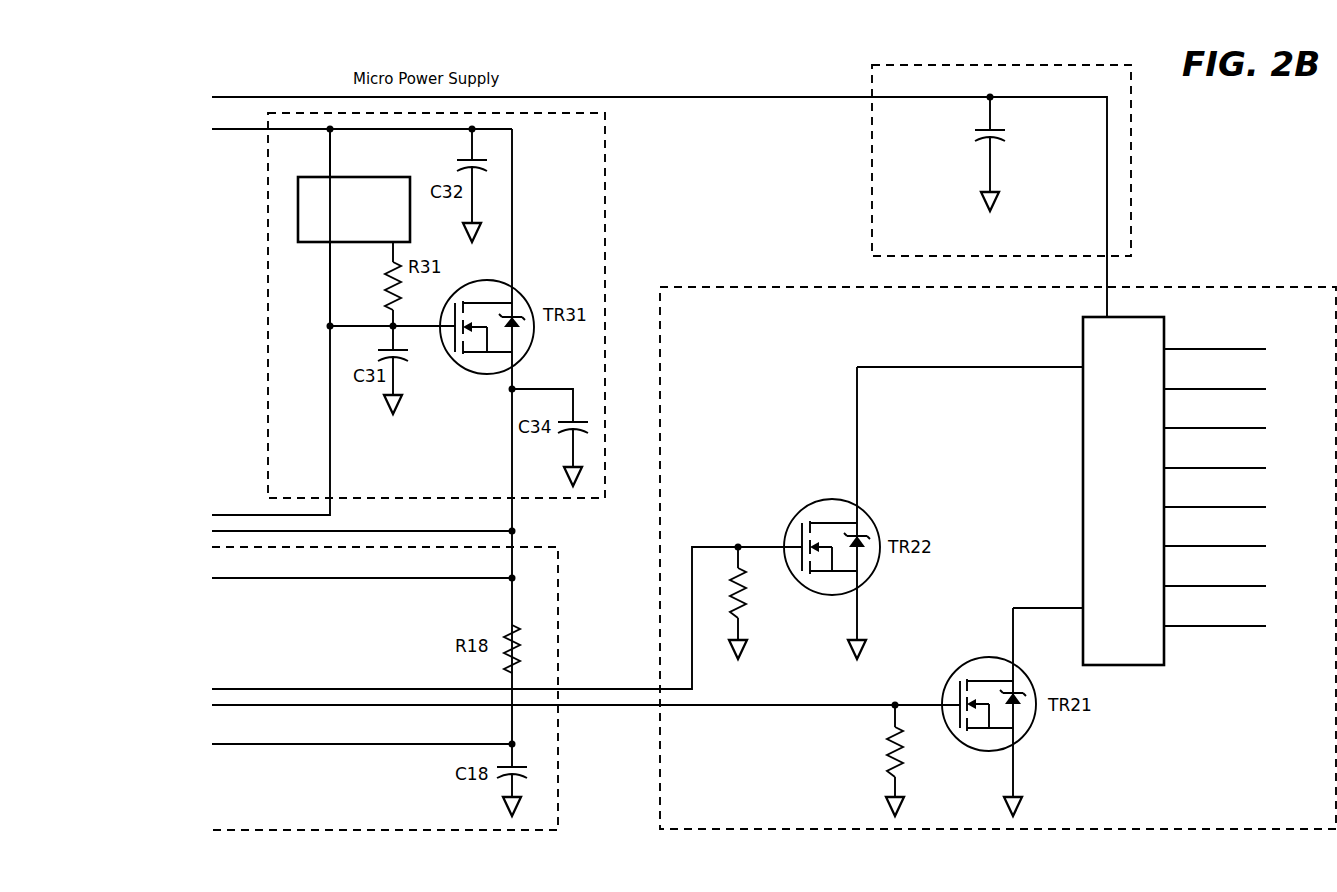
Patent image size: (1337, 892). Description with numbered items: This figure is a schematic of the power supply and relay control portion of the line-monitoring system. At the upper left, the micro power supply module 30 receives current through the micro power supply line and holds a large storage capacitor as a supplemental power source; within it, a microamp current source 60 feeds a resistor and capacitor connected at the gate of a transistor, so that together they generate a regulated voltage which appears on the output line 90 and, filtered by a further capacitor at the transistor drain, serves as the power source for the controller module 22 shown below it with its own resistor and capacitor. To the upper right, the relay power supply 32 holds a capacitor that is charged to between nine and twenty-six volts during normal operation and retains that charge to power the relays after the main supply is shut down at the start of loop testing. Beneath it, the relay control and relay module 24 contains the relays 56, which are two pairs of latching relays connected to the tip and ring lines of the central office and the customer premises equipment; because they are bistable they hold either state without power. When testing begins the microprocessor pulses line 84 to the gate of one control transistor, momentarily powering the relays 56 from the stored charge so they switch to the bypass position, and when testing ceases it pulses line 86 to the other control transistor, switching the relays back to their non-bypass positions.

The microamp current source 60 is at (356, 176).
The micro power supply module 30 is at (606, 170).
The supply output node 90 is at (513, 240).
The relay power supply module 32 is at (872, 165).
The relay control and relay module 24 is at (733, 287).
The controller module 22 is at (558, 583).
The line 86 is at (727, 545).
The line 84 is at (840, 706).
The relays 56 is at (1126, 666).